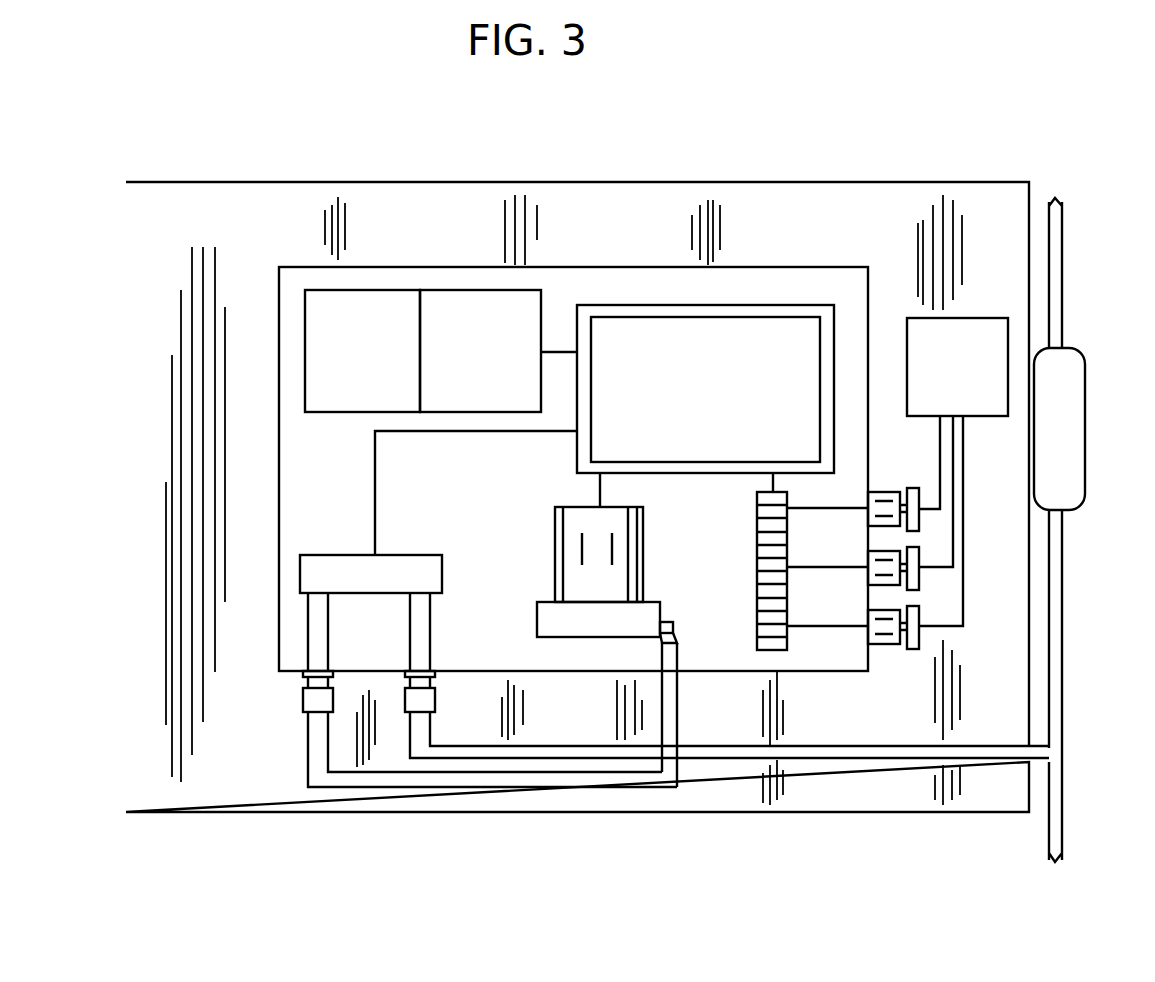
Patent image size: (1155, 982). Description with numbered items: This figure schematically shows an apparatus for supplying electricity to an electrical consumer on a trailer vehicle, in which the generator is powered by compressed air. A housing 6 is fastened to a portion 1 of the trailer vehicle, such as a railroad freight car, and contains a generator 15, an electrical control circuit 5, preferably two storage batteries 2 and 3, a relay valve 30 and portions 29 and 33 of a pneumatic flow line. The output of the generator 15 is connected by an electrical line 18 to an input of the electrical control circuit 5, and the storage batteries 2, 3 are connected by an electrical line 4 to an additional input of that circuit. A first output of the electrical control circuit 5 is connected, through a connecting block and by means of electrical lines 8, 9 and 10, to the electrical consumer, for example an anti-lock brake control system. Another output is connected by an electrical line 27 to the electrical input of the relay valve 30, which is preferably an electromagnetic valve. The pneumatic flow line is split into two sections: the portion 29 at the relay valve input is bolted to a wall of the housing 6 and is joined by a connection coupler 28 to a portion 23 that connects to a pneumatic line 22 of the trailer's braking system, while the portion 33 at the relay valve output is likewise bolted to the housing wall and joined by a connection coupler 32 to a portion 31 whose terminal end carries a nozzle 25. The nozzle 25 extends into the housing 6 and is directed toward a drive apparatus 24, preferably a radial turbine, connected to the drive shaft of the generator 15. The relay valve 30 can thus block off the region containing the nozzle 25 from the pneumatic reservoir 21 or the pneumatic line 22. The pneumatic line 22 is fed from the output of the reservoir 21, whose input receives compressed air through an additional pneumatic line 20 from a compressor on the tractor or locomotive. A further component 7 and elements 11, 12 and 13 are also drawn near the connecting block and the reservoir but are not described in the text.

The portion of trailer vehicle 1 is at (249, 195).
The storage battery 2 is at (352, 298).
The storage battery 3 is at (452, 298).
The electrical line 4 is at (550, 350).
The electrical control circuit 5 is at (617, 338).
The housing 6 is at (720, 268).
The control block 7 is at (993, 325).
The electrical line 8 is at (940, 445).
The electrical line 9 is at (953, 500).
The electrical line 10 is at (963, 546).
The valve 11 is at (884, 505).
The valve 12 is at (887, 577).
The valve 13 is at (890, 632).
The generator 15 is at (577, 558).
The electrical line 18 is at (600, 486).
The additional pneumatic line 20 is at (1057, 235).
The pneumatic reservoir 21 is at (1070, 375).
The pneumatic line 22 is at (1055, 578).
The portion of pneumatic flow line 23 is at (860, 757).
The drive apparatus 24 is at (664, 622).
The nozzle 25 is at (657, 643).
The electrical line 27 is at (375, 478).
The connection coupler 28 is at (412, 702).
The portion of pneumatic line 29 is at (417, 630).
The relay valve 30 is at (307, 573).
The portion of pneumatic flow line 31 is at (320, 778).
The connection coupler 32 is at (312, 700).
The portion of pneumatic flow line 33 is at (317, 628).